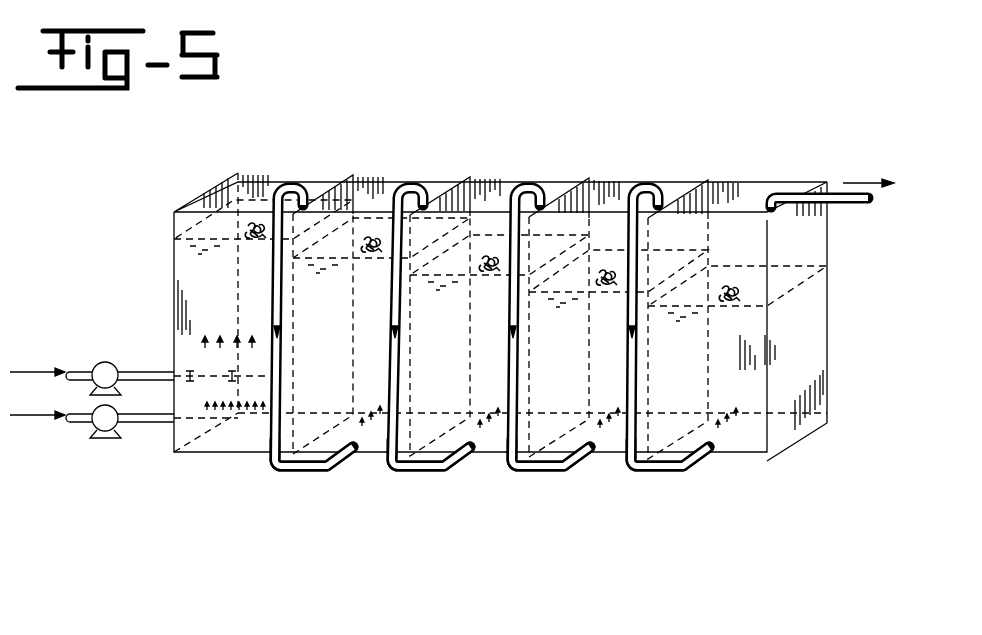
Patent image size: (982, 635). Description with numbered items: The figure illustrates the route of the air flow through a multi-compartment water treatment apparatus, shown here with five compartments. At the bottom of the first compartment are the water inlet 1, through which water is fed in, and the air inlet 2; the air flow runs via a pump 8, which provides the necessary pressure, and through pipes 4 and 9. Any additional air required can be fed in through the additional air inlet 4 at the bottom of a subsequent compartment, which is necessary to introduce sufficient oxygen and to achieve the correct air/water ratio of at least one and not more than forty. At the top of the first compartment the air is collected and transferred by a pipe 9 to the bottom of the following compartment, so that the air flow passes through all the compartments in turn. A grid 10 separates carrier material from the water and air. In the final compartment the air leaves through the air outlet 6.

The water inlet 1 is at (142, 370).
The air inlet 2 is at (146, 424).
The additional air inlet 4 is at (372, 456).
The air outlet 6 is at (851, 206).
The pump 8 is at (108, 362).
The pipe 9 is at (403, 212).
The grid 10 is at (262, 205).